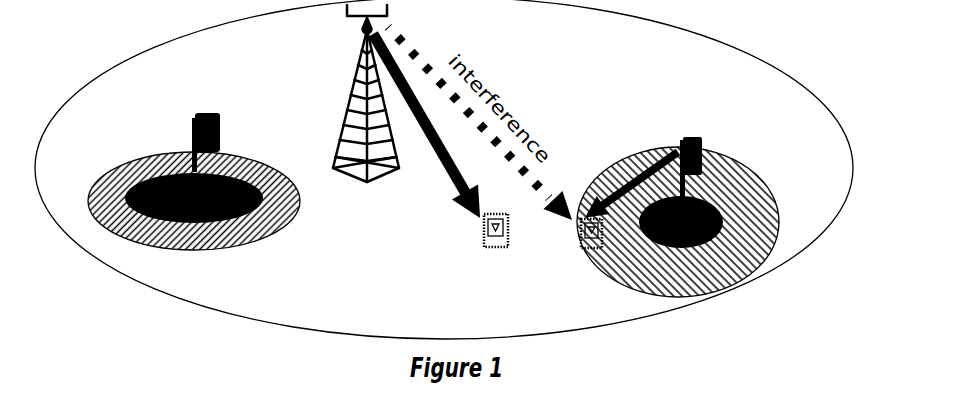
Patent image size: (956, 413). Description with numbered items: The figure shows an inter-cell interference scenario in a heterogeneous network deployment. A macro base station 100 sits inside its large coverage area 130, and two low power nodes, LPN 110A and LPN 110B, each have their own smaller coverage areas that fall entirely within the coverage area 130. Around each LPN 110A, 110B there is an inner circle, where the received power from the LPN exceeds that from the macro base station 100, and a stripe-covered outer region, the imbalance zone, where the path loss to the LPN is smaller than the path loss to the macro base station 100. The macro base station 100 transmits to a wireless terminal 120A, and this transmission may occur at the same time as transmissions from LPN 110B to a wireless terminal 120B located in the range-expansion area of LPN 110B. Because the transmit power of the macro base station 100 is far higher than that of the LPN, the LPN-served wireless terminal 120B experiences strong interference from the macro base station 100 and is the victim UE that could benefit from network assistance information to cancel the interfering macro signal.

The macro base station 100 is at (355, 93).
The LPN 110A is at (225, 130).
The LPN 110B is at (711, 176).
The wireless terminal 120A is at (471, 234).
The wireless terminal 120B is at (595, 274).
The coverage area 130 is at (444, 169).